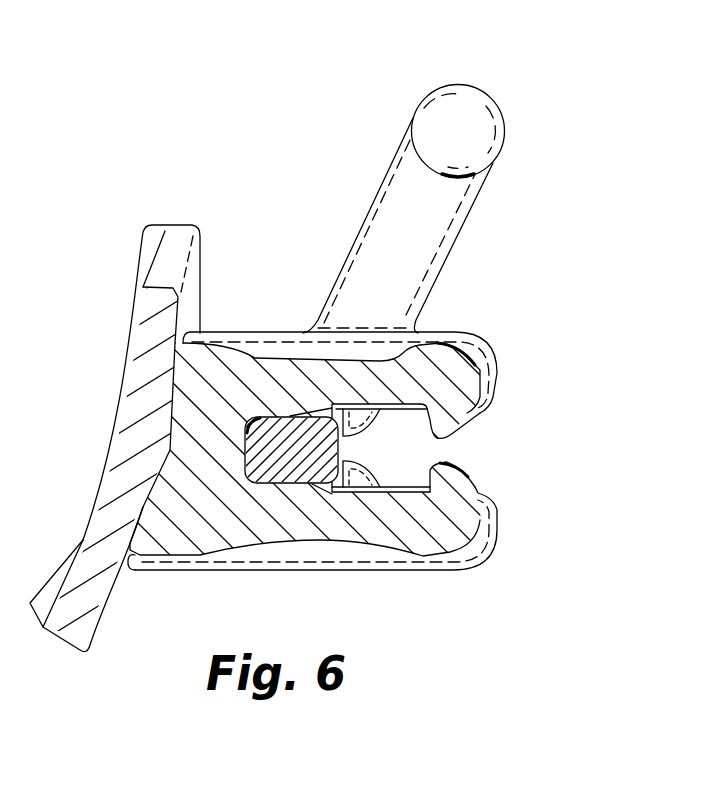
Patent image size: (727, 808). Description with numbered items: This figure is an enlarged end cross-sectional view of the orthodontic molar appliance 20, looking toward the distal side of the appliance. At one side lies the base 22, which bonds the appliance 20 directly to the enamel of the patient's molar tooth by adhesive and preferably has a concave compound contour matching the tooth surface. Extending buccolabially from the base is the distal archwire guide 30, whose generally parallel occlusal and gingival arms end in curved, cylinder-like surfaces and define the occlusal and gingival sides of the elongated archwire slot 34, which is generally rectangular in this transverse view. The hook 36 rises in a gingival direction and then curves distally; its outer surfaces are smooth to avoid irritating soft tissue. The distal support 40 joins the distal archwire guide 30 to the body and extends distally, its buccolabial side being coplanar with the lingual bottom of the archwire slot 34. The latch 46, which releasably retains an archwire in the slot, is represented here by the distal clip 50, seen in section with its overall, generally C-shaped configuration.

The appliance 20 is at (363, 340).
The base 22 is at (140, 382).
The distal archwire guide 30 is at (494, 528).
The archwire slot 34 is at (405, 489).
The hook 36 is at (472, 105).
The distal support 40 is at (293, 462).
The latch 46 is at (512, 428).
The distal clip 50 is at (208, 535).